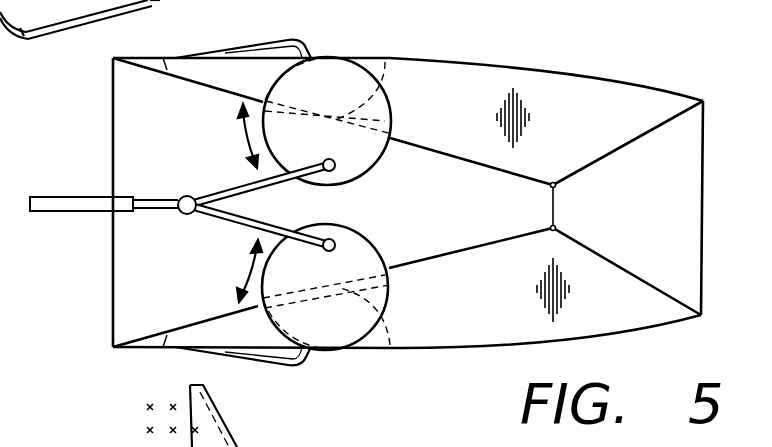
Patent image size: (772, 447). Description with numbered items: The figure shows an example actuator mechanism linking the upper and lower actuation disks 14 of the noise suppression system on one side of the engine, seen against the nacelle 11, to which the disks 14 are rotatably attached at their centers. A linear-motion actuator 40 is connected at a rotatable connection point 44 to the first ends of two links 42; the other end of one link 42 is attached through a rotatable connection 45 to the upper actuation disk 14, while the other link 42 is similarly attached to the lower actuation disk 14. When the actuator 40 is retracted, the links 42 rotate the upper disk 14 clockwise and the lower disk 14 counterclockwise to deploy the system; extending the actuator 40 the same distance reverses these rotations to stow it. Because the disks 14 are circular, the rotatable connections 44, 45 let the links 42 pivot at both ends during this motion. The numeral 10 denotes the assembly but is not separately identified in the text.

The frame 10 is at (503, 213).
The nacelle 11 is at (610, 82).
The actuation disk 14 is at (377, 58).
The linear-motion actuator 40 is at (52, 197).
The links 42 is at (230, 210).
The connection point 44 is at (184, 196).
The connections 45 is at (333, 234).